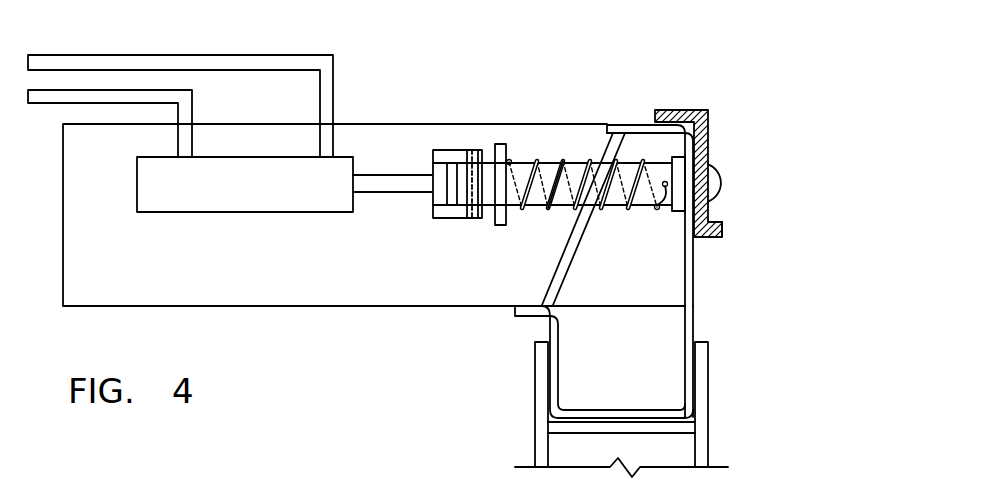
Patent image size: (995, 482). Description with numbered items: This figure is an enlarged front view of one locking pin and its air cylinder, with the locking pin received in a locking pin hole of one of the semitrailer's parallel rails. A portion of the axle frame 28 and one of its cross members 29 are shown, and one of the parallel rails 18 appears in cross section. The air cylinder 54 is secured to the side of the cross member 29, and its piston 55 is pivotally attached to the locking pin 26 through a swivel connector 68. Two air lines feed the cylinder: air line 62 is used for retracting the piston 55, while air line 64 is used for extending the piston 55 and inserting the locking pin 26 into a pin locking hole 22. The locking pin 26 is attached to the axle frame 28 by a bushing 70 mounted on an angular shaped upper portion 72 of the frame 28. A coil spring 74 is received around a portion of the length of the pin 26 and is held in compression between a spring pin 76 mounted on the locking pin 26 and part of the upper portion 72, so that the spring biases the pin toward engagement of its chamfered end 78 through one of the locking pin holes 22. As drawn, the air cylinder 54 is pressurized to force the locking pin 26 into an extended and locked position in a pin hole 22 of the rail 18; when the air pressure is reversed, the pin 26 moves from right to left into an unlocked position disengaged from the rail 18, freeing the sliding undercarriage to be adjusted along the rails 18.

The parallel rail 18 is at (710, 120).
The locking pin hole 22 is at (713, 211).
The locking pin 26 is at (537, 208).
The axle frame 28 is at (708, 375).
The cross member 29 is at (600, 122).
The air cylinder 54 is at (232, 213).
The piston 55 is at (400, 175).
The air line 62 is at (211, 54).
The air line 64 is at (192, 103).
The swivel connector 68 is at (462, 150).
The bushing 70 is at (676, 213).
The angular shaped upper portion 72 is at (496, 226).
The coil spring 74 is at (563, 200).
The spring pin 76 is at (657, 210).
The chamfered end 78 is at (734, 176).